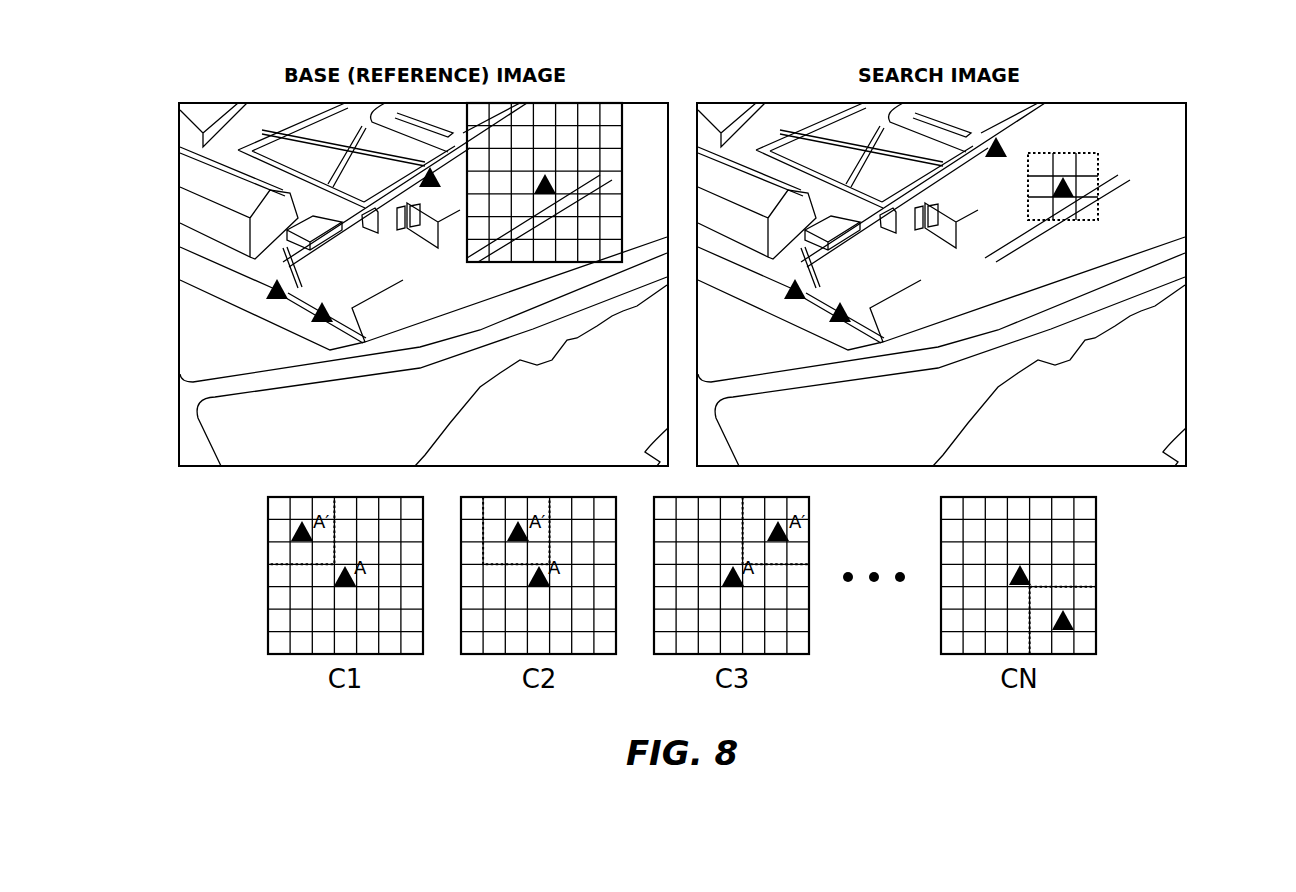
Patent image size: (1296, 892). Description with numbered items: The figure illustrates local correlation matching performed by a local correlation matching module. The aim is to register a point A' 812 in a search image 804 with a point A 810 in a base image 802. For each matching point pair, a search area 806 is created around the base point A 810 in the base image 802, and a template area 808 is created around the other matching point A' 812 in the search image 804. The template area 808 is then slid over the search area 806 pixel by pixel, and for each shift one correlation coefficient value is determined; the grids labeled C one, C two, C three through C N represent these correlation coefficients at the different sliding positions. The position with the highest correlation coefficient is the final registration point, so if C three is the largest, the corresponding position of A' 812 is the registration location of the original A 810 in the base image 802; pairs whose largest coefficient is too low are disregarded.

The base image 802 is at (174, 229).
The search image 804 is at (1192, 230).
The search area 806 is at (590, 103).
The template area 808 is at (1066, 153).
The point A 810 is at (548, 180).
The point A' 812 is at (1098, 150).